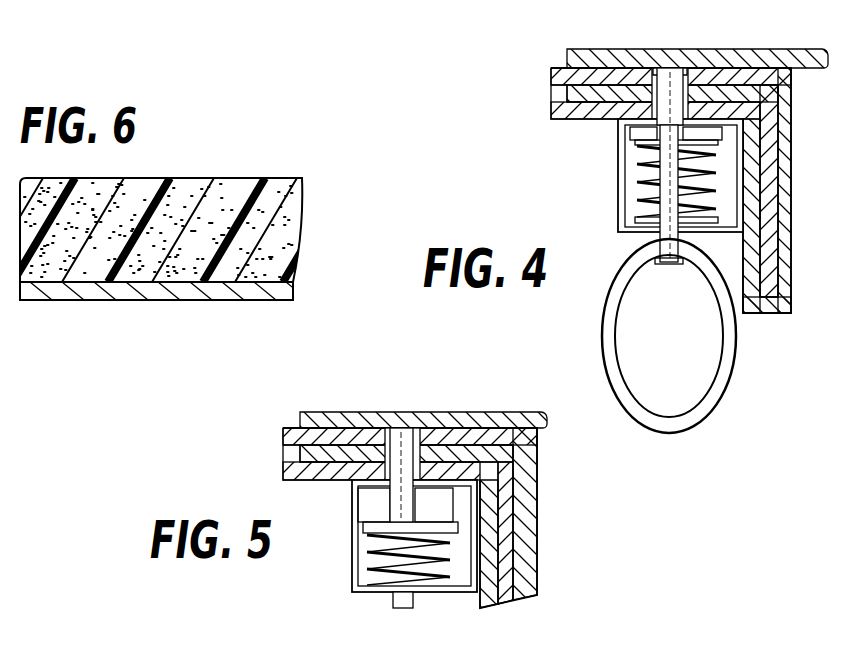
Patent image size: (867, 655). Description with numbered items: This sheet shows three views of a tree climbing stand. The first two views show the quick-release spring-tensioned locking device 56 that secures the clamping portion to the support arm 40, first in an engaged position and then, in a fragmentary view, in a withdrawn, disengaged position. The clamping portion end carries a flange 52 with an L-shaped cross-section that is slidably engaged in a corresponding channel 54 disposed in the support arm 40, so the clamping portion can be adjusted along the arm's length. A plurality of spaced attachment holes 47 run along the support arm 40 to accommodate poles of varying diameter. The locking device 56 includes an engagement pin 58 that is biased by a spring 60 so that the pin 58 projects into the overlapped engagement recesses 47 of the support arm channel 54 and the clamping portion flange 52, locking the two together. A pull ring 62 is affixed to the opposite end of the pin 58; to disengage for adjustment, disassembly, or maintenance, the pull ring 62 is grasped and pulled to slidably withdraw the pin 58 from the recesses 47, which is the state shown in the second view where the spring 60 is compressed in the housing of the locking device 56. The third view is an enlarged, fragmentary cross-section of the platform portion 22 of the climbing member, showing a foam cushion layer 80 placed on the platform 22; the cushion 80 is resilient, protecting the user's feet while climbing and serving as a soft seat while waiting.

In FIG. 6, the platform portion 22 is at (138, 298).
In FIG. 4, the support arm 40 is at (637, 56).
In FIG. 4, the attachment holes 47 is at (675, 67).
In FIG. 5, the attachment holes 47 is at (409, 450).
In FIG. 4, the flange 52 is at (767, 128).
In FIG. 5, the flange 52 is at (507, 505).
In FIG. 4, the channel 54 is at (557, 92).
In FIG. 5, the channel 54 is at (292, 442).
In FIG. 4, the locking device 56 is at (617, 157).
In FIG. 4, the engagement pin 58 is at (697, 66).
In FIG. 5, the engagement pin 58 is at (393, 600).
In FIG. 4, the spring 60 is at (637, 193).
In FIG. 4, the pull ring 62 is at (713, 408).
In FIG. 6, the foam cushion layer 80 is at (227, 200).